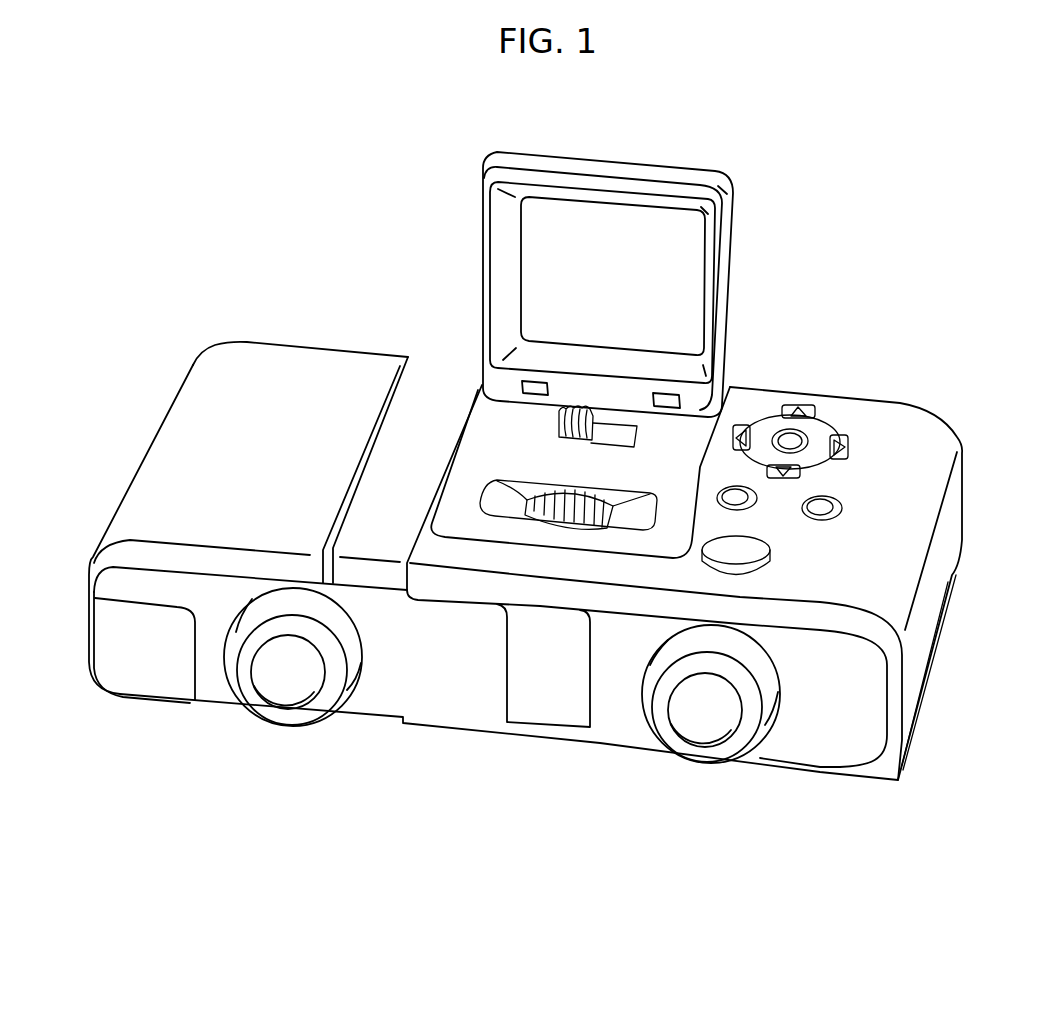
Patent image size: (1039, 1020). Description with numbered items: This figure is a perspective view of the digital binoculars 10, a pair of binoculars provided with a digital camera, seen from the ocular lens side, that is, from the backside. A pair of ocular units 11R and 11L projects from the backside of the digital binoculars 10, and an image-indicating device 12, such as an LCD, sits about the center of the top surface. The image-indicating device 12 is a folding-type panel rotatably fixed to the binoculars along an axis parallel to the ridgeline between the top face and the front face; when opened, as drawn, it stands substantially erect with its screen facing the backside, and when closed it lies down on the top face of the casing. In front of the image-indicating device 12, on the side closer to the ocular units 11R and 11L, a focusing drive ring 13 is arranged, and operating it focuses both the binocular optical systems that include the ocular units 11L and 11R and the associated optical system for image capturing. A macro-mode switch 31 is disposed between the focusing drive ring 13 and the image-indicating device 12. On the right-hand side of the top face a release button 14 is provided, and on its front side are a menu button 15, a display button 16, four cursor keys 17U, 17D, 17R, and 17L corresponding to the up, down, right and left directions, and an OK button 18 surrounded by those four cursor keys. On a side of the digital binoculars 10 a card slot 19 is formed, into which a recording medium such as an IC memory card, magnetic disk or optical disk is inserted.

The digital binoculars 10 is at (508, 790).
The ocular unit 11L is at (278, 727).
The ocular unit 11R is at (700, 765).
The image-indicating device 12 is at (603, 233).
The focusing drive ring 13 is at (565, 500).
The release button 14 is at (768, 560).
The menu button 15 is at (733, 497).
The display button 16 is at (841, 511).
The cursor key 17U is at (790, 407).
The cursor key 17D is at (800, 474).
The cursor key 17L is at (739, 428).
The cursor key 17R is at (846, 446).
The OK button 18 is at (810, 437).
The card slot 19 is at (918, 678).
The macro-mode switch 31 is at (563, 408).